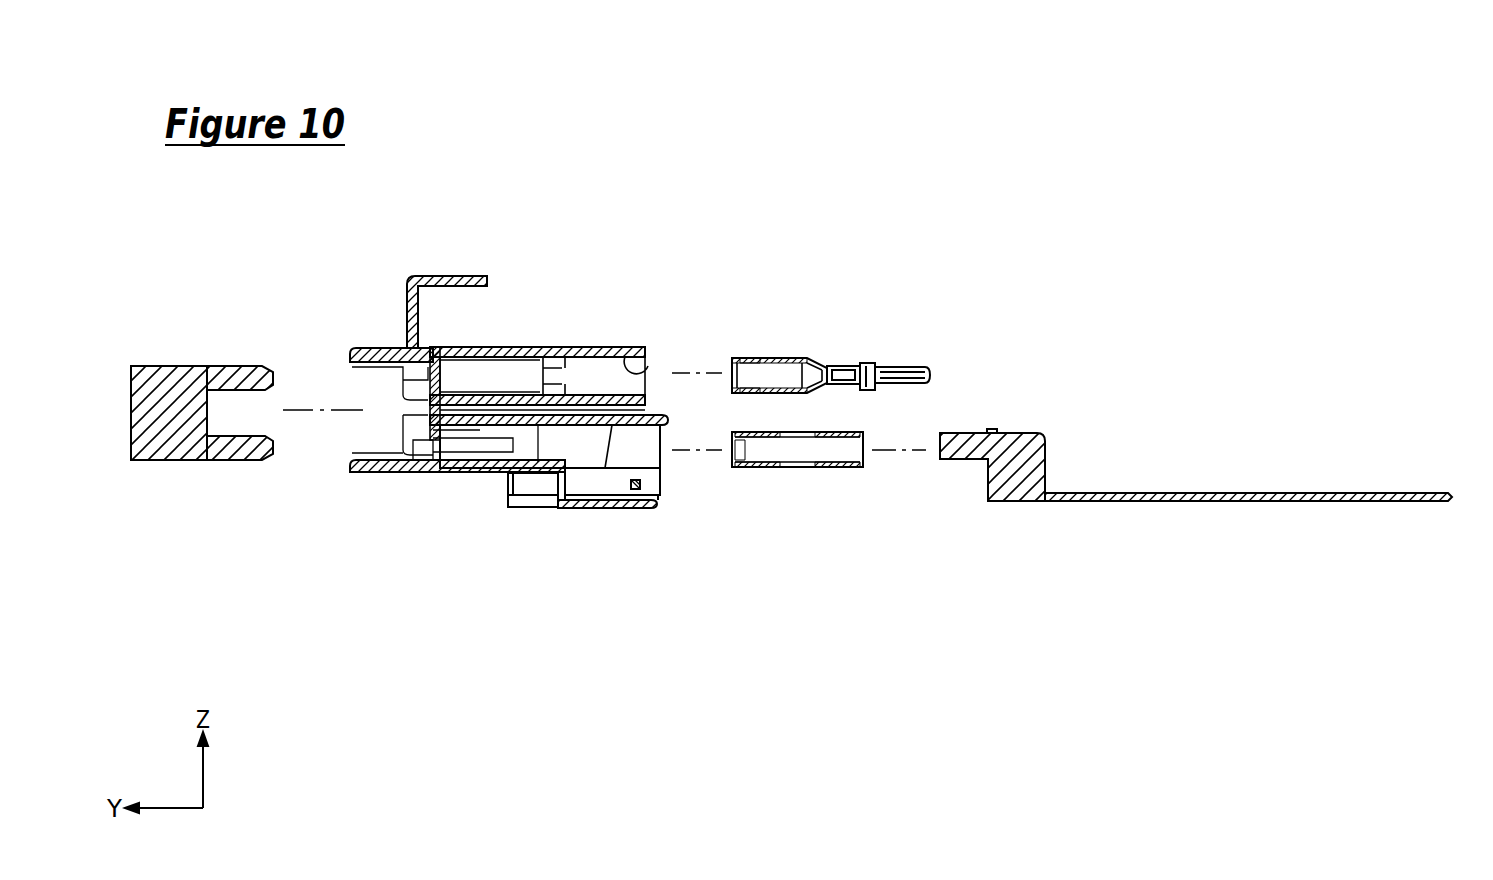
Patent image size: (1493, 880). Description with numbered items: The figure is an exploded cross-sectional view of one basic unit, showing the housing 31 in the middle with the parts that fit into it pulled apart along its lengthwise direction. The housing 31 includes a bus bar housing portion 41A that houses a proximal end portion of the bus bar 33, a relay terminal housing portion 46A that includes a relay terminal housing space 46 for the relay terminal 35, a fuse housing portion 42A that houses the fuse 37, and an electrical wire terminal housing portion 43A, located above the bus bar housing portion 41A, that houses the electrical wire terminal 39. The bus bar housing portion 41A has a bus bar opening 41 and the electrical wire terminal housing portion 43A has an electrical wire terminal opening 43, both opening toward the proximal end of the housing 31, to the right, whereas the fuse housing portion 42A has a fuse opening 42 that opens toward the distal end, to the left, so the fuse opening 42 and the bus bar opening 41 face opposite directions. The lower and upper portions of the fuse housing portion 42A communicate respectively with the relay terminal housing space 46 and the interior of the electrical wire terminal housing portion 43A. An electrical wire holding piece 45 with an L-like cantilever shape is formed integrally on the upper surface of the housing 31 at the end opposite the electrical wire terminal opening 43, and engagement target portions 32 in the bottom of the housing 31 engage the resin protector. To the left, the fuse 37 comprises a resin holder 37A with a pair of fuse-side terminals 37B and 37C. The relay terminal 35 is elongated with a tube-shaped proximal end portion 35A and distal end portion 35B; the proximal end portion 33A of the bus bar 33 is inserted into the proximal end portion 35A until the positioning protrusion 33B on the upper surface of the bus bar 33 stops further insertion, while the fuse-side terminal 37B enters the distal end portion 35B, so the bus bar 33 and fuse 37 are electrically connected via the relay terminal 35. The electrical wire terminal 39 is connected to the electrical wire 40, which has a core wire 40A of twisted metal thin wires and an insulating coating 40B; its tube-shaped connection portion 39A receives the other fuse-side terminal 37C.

The housing 31 is at (512, 345).
The engagement target portions 32 is at (527, 508).
The bus bar 33 is at (1194, 466).
The proximal end portion of the bus bar 33A is at (965, 447).
The positioning protrusion 33B is at (992, 428).
The relay terminal 35 is at (797, 470).
The proximal end portion of the relay terminal 35A is at (838, 470).
The distal end portion of the relay terminal 35B is at (745, 470).
The fuse 37 is at (179, 413).
The resin holder 37A is at (148, 388).
The fuse-side terminal 37B is at (240, 455).
The fuse-side terminal 37C is at (243, 381).
The electrical wire terminal 39 is at (773, 348).
The connection portion 39A is at (748, 356).
The electrical wire 40 is at (889, 314).
The core wire 40A is at (858, 365).
The insulating coating 40B is at (903, 367).
The bus bar opening 41 is at (630, 430).
The bus bar housing portion 41A is at (605, 468).
The fuse opening 42 is at (374, 457).
The fuse housing portion 42A is at (392, 475).
The electrical wire terminal opening 43 is at (652, 345).
The electrical wire terminal housing portion 43A is at (553, 345).
The electrical wire holding piece 45 is at (455, 274).
The relay terminal housing space 46 is at (492, 463).
The relay terminal housing portion 46A is at (456, 474).